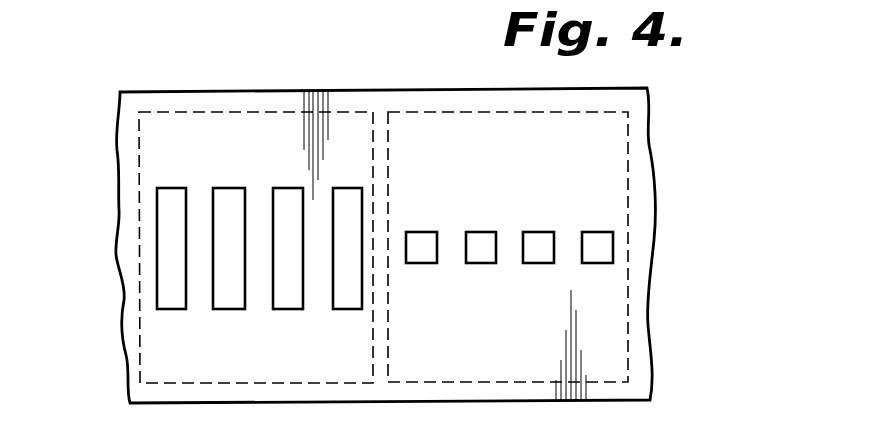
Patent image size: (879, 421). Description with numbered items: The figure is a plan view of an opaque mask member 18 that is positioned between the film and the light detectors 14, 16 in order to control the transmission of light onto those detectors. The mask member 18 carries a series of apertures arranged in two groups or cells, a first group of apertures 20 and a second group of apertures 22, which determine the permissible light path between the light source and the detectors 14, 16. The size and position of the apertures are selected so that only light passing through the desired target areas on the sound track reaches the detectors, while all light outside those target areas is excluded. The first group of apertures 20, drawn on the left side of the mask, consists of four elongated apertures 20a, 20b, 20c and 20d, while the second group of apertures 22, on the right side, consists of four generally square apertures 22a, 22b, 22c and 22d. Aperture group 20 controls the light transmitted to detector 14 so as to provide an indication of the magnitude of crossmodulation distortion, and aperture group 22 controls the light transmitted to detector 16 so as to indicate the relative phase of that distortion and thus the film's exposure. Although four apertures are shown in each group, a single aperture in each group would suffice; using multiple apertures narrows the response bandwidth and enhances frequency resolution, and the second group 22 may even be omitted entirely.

The light detector 14 is at (135, 251).
The light detector 16 is at (630, 187).
The mask member 18 is at (645, 326).
The first group of apertures 20 is at (259, 209).
The elongated aperture 20a is at (163, 208).
The elongated aperture 20b is at (226, 204).
The elongated aperture 20c is at (280, 206).
The elongated aperture 20d is at (342, 205).
The second group of apertures 22 is at (508, 188).
The square aperture 22a is at (412, 245).
The square aperture 22b is at (474, 244).
The square aperture 22c is at (532, 245).
The square aperture 22d is at (593, 243).